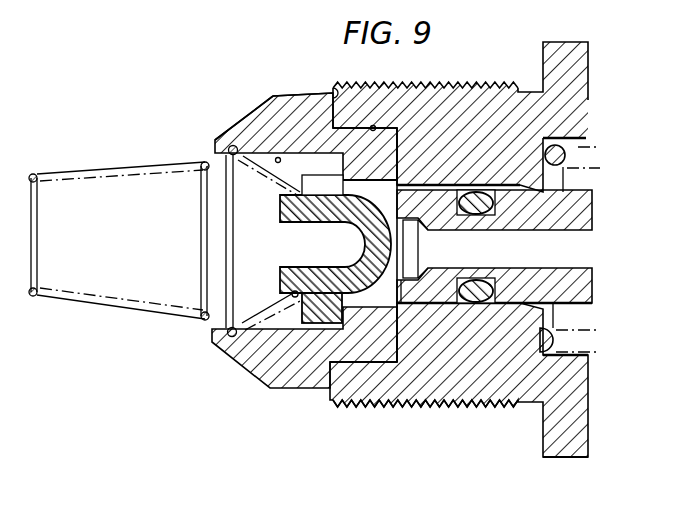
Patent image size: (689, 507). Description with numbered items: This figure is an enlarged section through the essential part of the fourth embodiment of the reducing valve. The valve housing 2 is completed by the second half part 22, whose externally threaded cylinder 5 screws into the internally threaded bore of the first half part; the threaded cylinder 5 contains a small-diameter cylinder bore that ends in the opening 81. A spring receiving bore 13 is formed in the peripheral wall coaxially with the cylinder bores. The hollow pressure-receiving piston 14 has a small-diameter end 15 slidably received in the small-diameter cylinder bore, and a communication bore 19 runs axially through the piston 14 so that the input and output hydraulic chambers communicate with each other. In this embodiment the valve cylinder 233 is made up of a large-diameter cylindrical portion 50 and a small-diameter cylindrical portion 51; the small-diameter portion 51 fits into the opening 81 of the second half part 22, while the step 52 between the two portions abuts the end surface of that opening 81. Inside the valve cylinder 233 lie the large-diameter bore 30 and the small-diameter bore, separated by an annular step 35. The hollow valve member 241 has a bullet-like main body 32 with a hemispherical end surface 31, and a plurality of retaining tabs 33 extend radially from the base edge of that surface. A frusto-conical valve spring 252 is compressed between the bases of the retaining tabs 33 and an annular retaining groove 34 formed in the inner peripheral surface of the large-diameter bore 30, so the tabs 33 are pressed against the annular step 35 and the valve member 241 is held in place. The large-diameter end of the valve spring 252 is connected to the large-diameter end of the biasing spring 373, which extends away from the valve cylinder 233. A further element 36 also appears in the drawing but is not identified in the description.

The valve housing 2 is at (555, 40).
The externally threaded cylinder 5 is at (468, 84).
The opening 81 is at (377, 127).
The spring receiving bore 13 is at (571, 150).
The pressure-receiving piston 14 is at (595, 303).
The small-diameter end 15 is at (408, 288).
The communication bore 19 is at (550, 236).
The second half part 22 is at (545, 156).
The valve cylinder 233 is at (265, 92).
The valve member 241 is at (275, 275).
The valve spring 252 is at (259, 311).
The large-diameter bore 30 is at (281, 158).
The hemispherical end surface 31 is at (390, 272).
The main body 32 is at (281, 205).
The retaining tabs 33 is at (314, 177).
The annular retaining groove 34 is at (244, 121).
The annular step 35 is at (342, 172).
The O-ring 36 is at (403, 212).
The biasing spring 373 is at (90, 303).
The large-diameter cylindrical portion 50 is at (243, 352).
The small-diameter cylindrical portion 51 is at (377, 362).
The step 52 is at (333, 91).